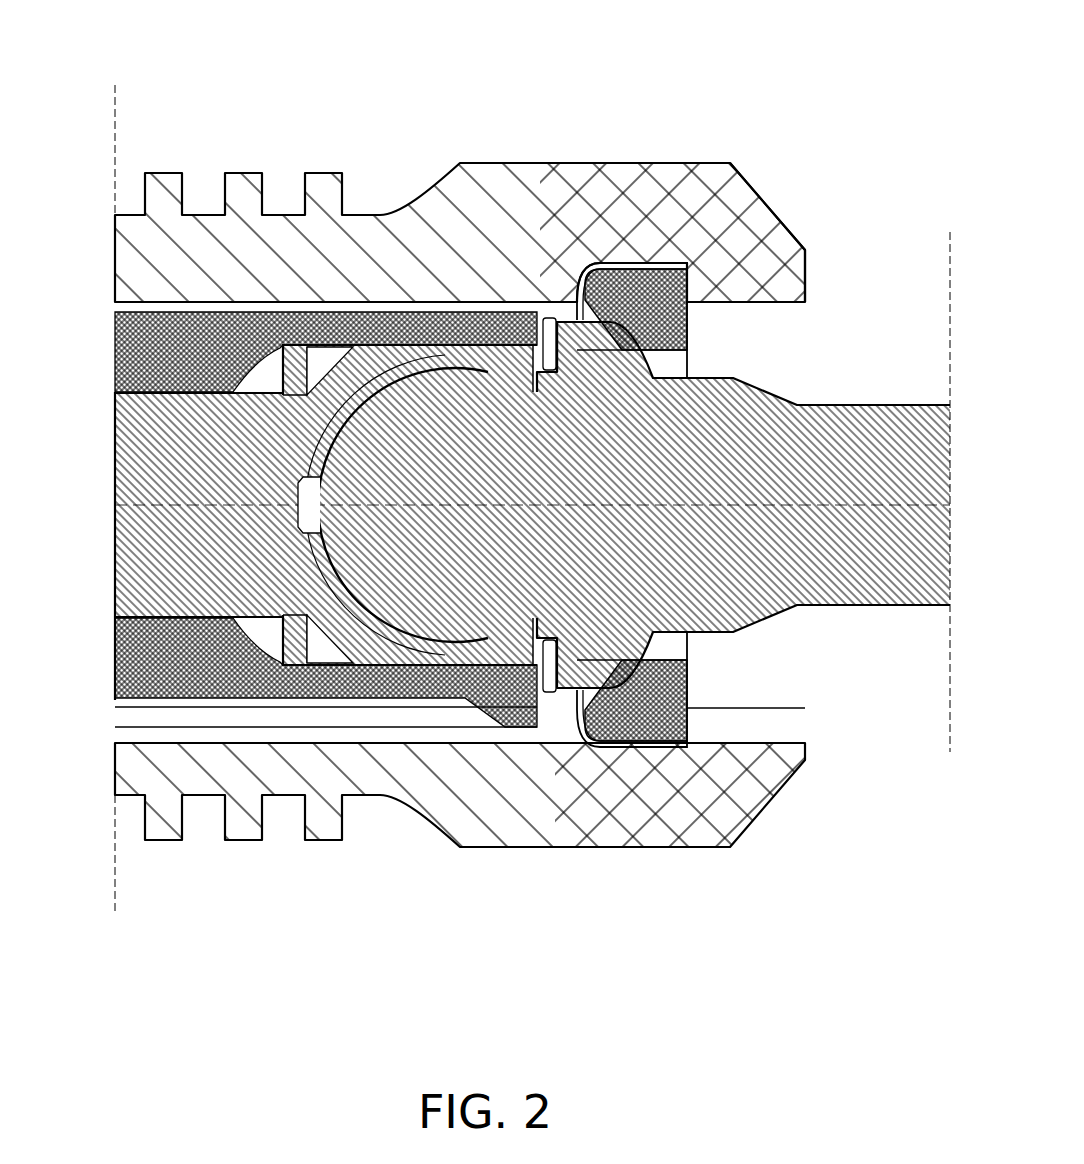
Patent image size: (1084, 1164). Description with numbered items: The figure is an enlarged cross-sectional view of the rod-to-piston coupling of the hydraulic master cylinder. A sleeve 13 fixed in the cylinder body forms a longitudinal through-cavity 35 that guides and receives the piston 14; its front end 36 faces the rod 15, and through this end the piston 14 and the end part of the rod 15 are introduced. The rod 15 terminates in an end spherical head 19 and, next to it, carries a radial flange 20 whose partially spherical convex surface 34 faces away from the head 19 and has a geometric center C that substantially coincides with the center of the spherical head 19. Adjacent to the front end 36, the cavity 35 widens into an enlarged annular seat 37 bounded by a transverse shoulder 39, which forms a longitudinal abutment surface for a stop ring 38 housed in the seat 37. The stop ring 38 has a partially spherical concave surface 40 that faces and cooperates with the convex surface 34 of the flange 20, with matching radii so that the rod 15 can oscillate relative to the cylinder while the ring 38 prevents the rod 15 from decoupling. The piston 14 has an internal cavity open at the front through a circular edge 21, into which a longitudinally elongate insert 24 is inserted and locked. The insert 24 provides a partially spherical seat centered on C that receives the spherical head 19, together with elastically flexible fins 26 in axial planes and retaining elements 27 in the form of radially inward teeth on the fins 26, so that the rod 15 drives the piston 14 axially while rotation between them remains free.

The sleeve 13 is at (545, 190).
The radial flange 20 is at (695, 190).
The rod 15 is at (887, 407).
The piston 14 is at (515, 385).
The end spherical head 19 is at (378, 485).
The elastically flexible fins 26 is at (500, 368).
The insert 24 is at (262, 383).
The longitudinal through-cavity 35 is at (300, 303).
The retaining elements 27 is at (548, 345).
The circular edge 21 is at (570, 318).
The enlarged annular seat 37 is at (615, 262).
The transverse shoulder 39 is at (588, 278).
The stop ring 38 is at (640, 752).
The partially spherical concave surface 40 is at (560, 745).
The front end 36 is at (783, 303).
The partially spherical convex surface 34 is at (690, 360).
The geometric center C is at (110, 662).